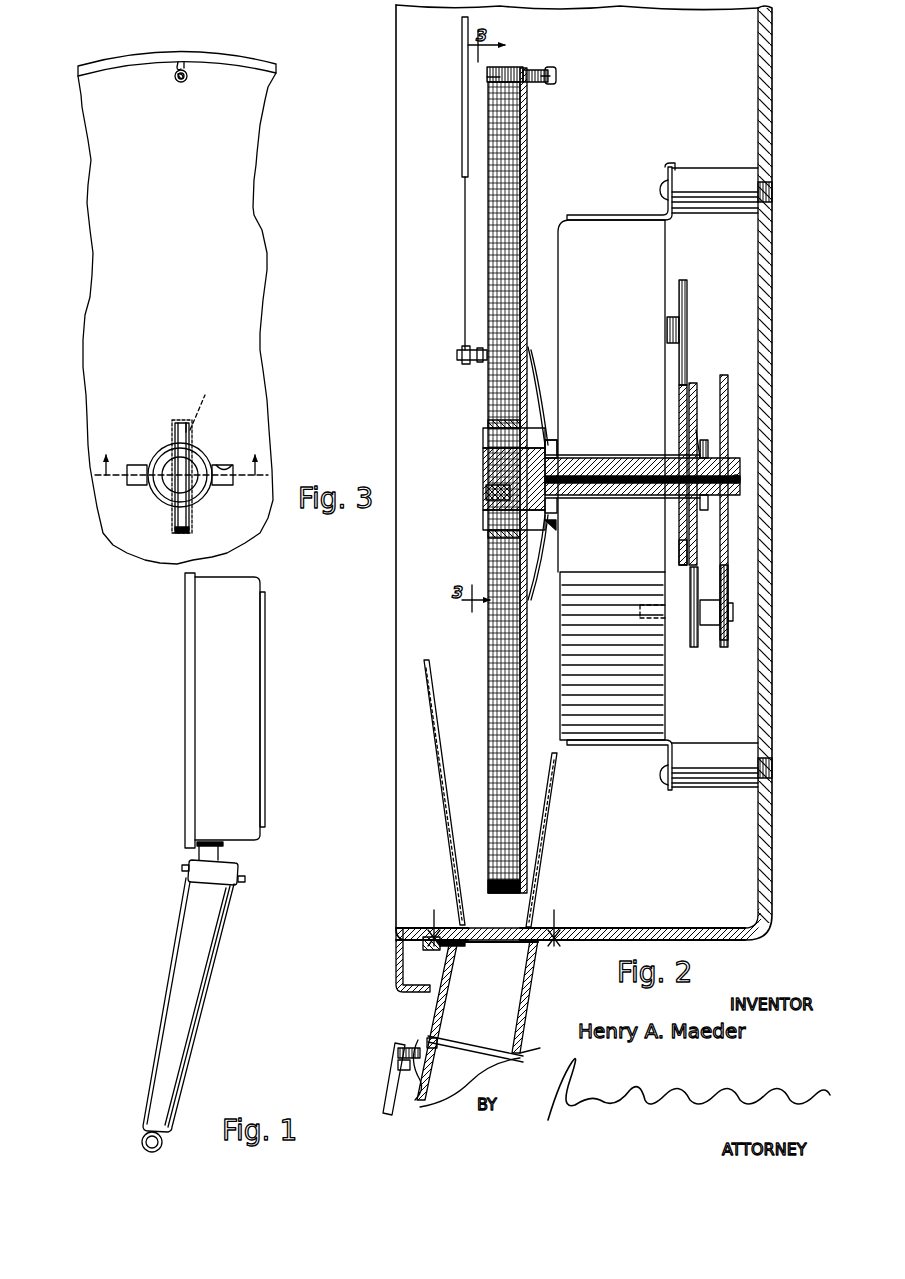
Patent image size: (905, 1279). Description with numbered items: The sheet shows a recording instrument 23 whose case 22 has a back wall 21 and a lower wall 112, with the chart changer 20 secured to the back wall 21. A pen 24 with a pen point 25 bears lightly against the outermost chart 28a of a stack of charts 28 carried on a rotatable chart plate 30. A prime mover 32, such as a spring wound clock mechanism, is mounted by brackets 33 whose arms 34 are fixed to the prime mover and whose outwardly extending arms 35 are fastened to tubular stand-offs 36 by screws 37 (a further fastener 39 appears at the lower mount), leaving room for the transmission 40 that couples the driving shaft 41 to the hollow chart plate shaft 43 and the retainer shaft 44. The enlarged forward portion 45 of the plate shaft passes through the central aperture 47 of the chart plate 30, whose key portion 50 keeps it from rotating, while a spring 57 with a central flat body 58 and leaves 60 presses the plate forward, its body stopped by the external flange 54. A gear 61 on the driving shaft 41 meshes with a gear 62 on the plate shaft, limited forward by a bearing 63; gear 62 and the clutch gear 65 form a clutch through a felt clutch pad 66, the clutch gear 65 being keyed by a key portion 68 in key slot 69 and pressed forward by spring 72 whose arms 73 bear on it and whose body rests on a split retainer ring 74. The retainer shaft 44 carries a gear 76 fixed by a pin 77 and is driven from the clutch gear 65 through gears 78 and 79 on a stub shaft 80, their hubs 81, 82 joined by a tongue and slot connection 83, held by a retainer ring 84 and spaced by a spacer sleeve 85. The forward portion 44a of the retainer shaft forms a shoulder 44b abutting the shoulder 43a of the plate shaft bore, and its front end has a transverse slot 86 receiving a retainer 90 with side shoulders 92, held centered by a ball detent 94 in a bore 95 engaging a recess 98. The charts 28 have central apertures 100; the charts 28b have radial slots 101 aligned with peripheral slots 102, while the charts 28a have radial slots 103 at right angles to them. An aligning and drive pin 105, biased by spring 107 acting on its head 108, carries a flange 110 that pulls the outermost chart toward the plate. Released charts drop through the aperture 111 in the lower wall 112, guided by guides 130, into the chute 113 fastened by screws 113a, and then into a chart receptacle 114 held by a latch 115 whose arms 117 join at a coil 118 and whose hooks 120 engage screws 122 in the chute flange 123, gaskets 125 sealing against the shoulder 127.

In FIG. 2, the chart changer 20 is at (484, 518).
In FIG. 2, the back wall 21 is at (774, 655).
In FIG. 1, the case 22 is at (268, 805).
In FIG. 2, the case 22 is at (612, 936).
In FIG. 1, the recording instrument 23 is at (182, 710).
In FIG. 2, the pen 24 is at (462, 200).
In FIG. 2, the pen point 25 is at (482, 362).
In FIG. 2, the charts 28 is at (488, 654).
In FIG. 3, the chart 28a is at (252, 370).
In FIG. 3, the chart 28b is at (140, 468).
In FIG. 3, the chart plate 30 is at (236, 61).
In FIG. 2, the chart plate 30 is at (527, 130).
In FIG. 2, the prime mover 32 is at (556, 240).
In FIG. 2, the brackets 33 is at (625, 212).
In FIG. 2, the arms 34 is at (570, 216).
In FIG. 2, the arms 35 is at (668, 165).
In FIG. 2, the stand-offs 36 is at (700, 172).
In FIG. 2, the screws 37 is at (660, 188).
In FIG. 2, the screw 39 is at (774, 768).
In FIG. 2, the transmission 40 is at (712, 352).
In FIG. 2, the driving shaft 41 is at (667, 330).
In FIG. 2, the chart plate shaft 43 is at (630, 508).
In FIG. 2, the forwardly facing shoulder 43a is at (483, 466).
In FIG. 2, the retainer shaft 44 is at (598, 470).
In FIG. 3, the forward portion 44a is at (190, 458).
In FIG. 2, the forward portion 44a is at (486, 515).
In FIG. 2, the rearwardly facing shoulder 44b is at (492, 527).
In FIG. 3, the enlarged forward portion 45 is at (222, 466).
In FIG. 2, the enlarged forward portion 45 is at (485, 456).
In FIG. 2, the central aperture 47 is at (545, 535).
In FIG. 2, the key portion 50 is at (483, 434).
In FIG. 2, the external flange 54 is at (548, 440).
In FIG. 2, the spring 57 is at (542, 398).
In FIG. 2, the central flat body 58 is at (556, 522).
In FIG. 2, the arms or leaves 60 is at (528, 590).
In FIG. 2, the gear 61 is at (687, 300).
In FIG. 2, the gear 62 is at (679, 553).
In FIG. 2, the bearing 63 is at (680, 445).
In FIG. 2, the clutch gear 65 is at (712, 400).
In FIG. 2, the clutch pad 66 is at (693, 388).
In FIG. 2, the key portion 68 is at (720, 460).
In FIG. 2, the key slot 69 is at (704, 446).
In FIG. 2, the spring 72 is at (712, 508).
In FIG. 2, the leaves or arms 73 is at (718, 524).
In FIG. 2, the split retainer ring 74 is at (730, 499).
In FIG. 2, the gear 76 is at (728, 405).
In FIG. 2, the pin 77 is at (739, 475).
In FIG. 2, the gear 78 is at (678, 682).
In FIG. 2, the gear 79 is at (728, 648).
In FIG. 2, the stub shaft 80 is at (736, 608).
In FIG. 2, the hub 81 is at (696, 648).
In FIG. 2, the hub 82 is at (710, 648).
In FIG. 2, the tongue and slot connection 83 is at (701, 600).
In FIG. 2, the retainer ring 84 is at (729, 640).
In FIG. 2, the spacer sleeve 85 is at (648, 500).
In FIG. 3, the transverse slot 86 is at (190, 481).
In FIG. 3, the retainer 90 is at (178, 423).
In FIG. 2, the retainer 90 is at (486, 496).
In FIG. 3, the side shoulders 92 is at (175, 438).
In FIG. 2, the ball detent 94 is at (483, 478).
In FIG. 2, the longitudinal bore 95 is at (483, 505).
In FIG. 2, the recess 98 is at (483, 489).
In FIG. 3, the central apertures 100 is at (190, 519).
In FIG. 3, the radial slots 101 is at (147, 528).
In FIG. 2, the radial slots 101 is at (488, 422).
In FIG. 3, the peripheral slots 102 is at (181, 62).
In FIG. 2, the peripheral slots 102 is at (496, 67).
In FIG. 3, the radial slots 103 is at (234, 478).
In FIG. 2, the aligning and drive pin 105 is at (532, 70).
In FIG. 2, the spring 107 is at (543, 84).
In FIG. 2, the head 108 is at (557, 77).
In FIG. 3, the flange 110 is at (185, 82).
In FIG. 2, the flange 110 is at (487, 75).
In FIG. 2, the aperture 111 is at (552, 942).
In FIG. 2, the lower wall 112 is at (680, 927).
In FIG. 1, the chute 113 is at (222, 846).
In FIG. 2, the chute 113 is at (540, 968).
In FIG. 2, the screws 113a is at (568, 922).
In FIG. 1, the chart receptacle 114 is at (195, 965).
In FIG. 1, the latch 115 is at (202, 1020).
In FIG. 1, the arms 117 is at (158, 1045).
In FIG. 1, the coil 118 is at (162, 1142).
In FIG. 2, the hooks 120 is at (410, 1045).
In FIG. 1, the screws 122 is at (182, 868).
In FIG. 2, the screws 122 is at (398, 1053).
In FIG. 1, the flange 123 is at (230, 872).
In FIG. 2, the flange 123 is at (398, 1066).
In FIG. 2, the gaskets 125 is at (450, 946).
In FIG. 2, the shoulder 127 is at (418, 1038).
In FIG. 2, the guides 130 is at (443, 822).